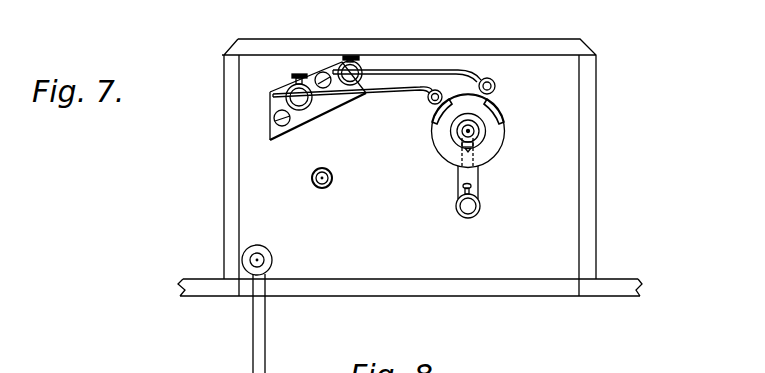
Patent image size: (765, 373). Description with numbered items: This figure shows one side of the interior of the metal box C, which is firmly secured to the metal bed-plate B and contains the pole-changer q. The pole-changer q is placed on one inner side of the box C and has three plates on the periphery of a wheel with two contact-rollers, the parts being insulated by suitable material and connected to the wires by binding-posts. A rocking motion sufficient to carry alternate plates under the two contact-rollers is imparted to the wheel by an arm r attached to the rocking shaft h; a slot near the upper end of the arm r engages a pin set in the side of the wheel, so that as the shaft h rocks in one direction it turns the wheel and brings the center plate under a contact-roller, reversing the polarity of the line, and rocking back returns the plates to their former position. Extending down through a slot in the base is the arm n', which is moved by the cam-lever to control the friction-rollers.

The metal box C is at (422, 167).
The bed-plate B is at (410, 274).
The pole-changer q is at (384, 94).
The arm r is at (475, 168).
The rocking shaft h is at (456, 206).
The arm n' is at (266, 309).